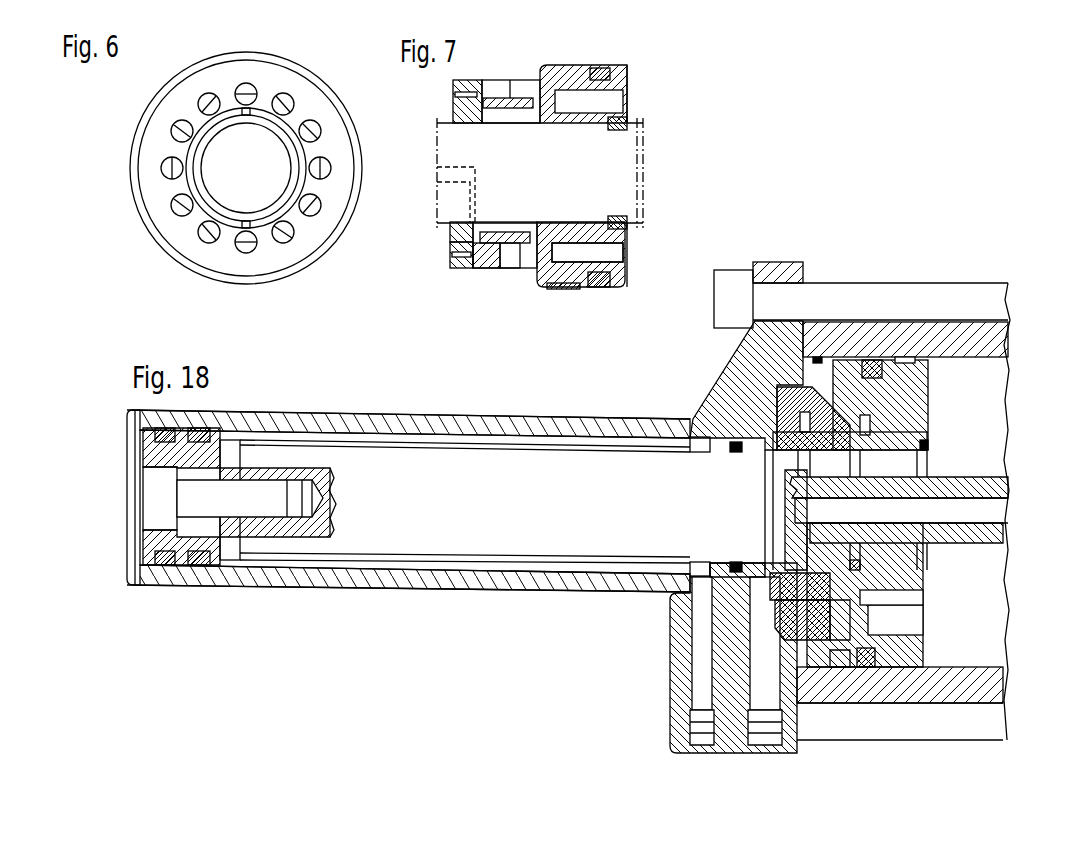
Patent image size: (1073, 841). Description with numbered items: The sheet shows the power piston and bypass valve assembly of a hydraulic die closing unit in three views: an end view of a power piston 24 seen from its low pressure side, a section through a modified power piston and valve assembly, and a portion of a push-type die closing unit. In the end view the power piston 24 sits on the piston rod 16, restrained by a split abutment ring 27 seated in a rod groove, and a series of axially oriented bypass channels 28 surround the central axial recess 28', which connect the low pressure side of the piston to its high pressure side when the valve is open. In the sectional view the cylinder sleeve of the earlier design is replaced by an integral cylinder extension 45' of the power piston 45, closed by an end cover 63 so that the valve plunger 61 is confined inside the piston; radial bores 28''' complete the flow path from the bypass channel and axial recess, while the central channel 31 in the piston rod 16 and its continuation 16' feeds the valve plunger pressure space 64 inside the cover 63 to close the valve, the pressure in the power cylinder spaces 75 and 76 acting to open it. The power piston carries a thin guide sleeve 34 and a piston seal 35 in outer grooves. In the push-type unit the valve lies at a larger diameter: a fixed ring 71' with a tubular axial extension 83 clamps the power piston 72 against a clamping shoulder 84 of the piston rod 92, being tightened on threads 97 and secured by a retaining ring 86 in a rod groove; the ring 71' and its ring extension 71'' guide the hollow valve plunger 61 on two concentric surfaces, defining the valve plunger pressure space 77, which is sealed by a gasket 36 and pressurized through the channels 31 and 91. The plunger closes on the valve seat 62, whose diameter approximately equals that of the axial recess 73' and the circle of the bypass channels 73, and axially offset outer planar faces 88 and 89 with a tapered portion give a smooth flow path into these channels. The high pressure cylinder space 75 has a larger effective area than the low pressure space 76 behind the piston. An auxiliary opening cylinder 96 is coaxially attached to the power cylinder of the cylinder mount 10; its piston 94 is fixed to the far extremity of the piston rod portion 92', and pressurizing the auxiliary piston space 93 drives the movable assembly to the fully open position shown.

In FIG. 18, the cylinder mount 10 is at (965, 345).
In FIG. 7, the piston rod 16 is at (526, 156).
In FIG. 6, the shaft end portion 16' is at (217, 142).
In FIG. 7, the shaft end portion 16' is at (648, 176).
In FIG. 6, the power piston 24 is at (257, 263).
In FIG. 6, the split abutment ring 27 is at (272, 218).
In FIG. 7, the split abutment ring 27 is at (618, 226).
In FIG. 6, the bypass channels 28 is at (308, 260).
In FIG. 7, the bypass channels 28 is at (611, 271).
In FIG. 6, the axial recess 28' is at (343, 109).
In FIG. 7, the axial recess 28' is at (531, 121).
In FIG. 7, the radial bores 28''' is at (523, 284).
In FIG. 7, the central channel 31 is at (437, 187).
In FIG. 18, the central channel 31 is at (975, 514).
In FIG. 7, the guide sleeve 34 is at (562, 290).
In FIG. 18, the guide sleeve 34 is at (905, 355).
In FIG. 7, the piston seal 35 is at (602, 292).
In FIG. 18, the piston seal 35 is at (868, 355).
In FIG. 18, the gasket 36 is at (860, 455).
In FIG. 6, the power piston 45 is at (273, 168).
In FIG. 7, the power piston 45 is at (581, 290).
In FIG. 7, the cylinder extension 45' is at (486, 289).
In FIG. 7, the valve plunger 61 is at (497, 248).
In FIG. 18, the valve plunger 61 is at (790, 622).
In FIG. 7, the valve seat 62 is at (545, 85).
In FIG. 18, the valve seat 62 is at (835, 413).
In FIG. 7, the end cover 63 is at (465, 243).
In FIG. 7, the valve plunger pressure space 64 is at (455, 255).
In FIG. 18, the fixed ring 71' is at (788, 412).
In FIG. 18, the ring extension 71'' is at (915, 561).
In FIG. 18, the power piston 72 is at (912, 653).
In FIG. 18, the bypass channels 73 is at (905, 595).
In FIG. 18, the axial recess 73' is at (920, 600).
In FIG. 18, the high pressure cylinder space 75 is at (772, 635).
In FIG. 18, the low pressure space 76 is at (993, 378).
In FIG. 18, the valve plunger pressure space 77 is at (800, 602).
In FIG. 18, the tubular axial extension 83 is at (925, 440).
In FIG. 18, the clamping shoulder 84 is at (928, 436).
In FIG. 18, the retaining ring 86 is at (765, 568).
In FIG. 18, the outer planar face 88 is at (850, 668).
In FIG. 18, the outer planar face 89 is at (840, 668).
In FIG. 18, the channel 91 is at (800, 538).
In FIG. 18, the piston rod 92 is at (909, 507).
In FIG. 18, the piston rod portion 92' is at (455, 541).
In FIG. 18, the auxiliary piston space 93 is at (245, 560).
In FIG. 18, the piston 94 is at (180, 566).
In FIG. 18, the auxiliary opening cylinder 96 is at (352, 580).
In FIG. 18, the threads 97 is at (775, 452).